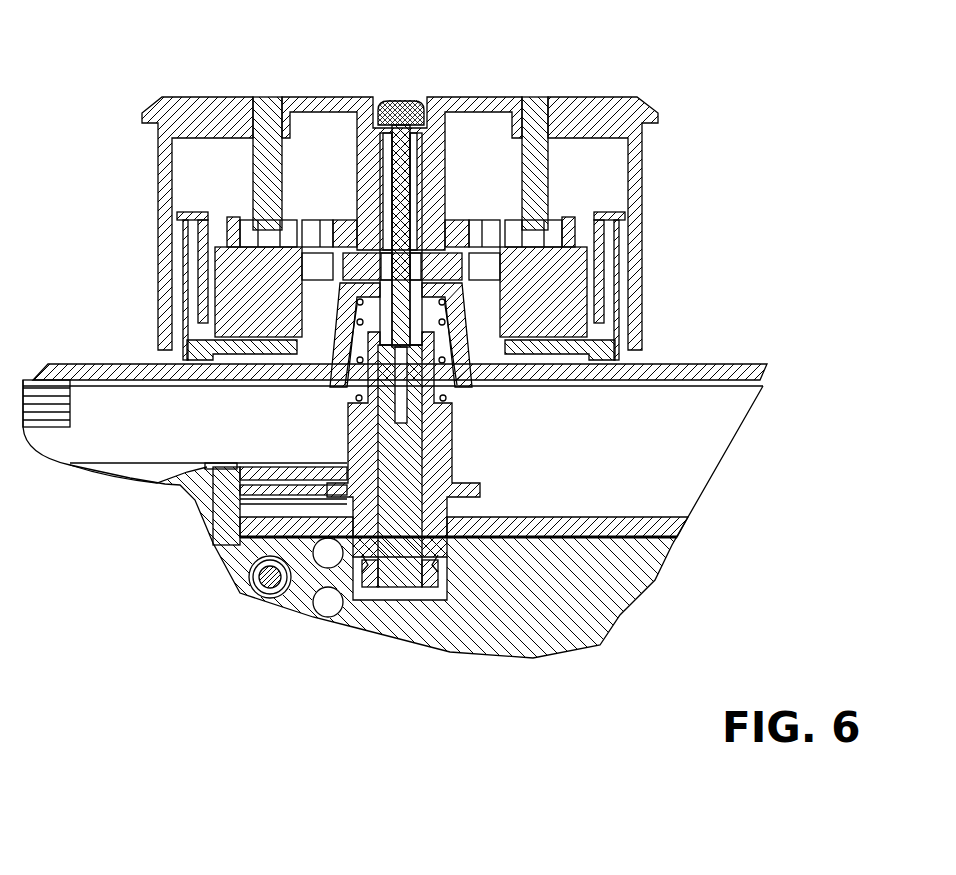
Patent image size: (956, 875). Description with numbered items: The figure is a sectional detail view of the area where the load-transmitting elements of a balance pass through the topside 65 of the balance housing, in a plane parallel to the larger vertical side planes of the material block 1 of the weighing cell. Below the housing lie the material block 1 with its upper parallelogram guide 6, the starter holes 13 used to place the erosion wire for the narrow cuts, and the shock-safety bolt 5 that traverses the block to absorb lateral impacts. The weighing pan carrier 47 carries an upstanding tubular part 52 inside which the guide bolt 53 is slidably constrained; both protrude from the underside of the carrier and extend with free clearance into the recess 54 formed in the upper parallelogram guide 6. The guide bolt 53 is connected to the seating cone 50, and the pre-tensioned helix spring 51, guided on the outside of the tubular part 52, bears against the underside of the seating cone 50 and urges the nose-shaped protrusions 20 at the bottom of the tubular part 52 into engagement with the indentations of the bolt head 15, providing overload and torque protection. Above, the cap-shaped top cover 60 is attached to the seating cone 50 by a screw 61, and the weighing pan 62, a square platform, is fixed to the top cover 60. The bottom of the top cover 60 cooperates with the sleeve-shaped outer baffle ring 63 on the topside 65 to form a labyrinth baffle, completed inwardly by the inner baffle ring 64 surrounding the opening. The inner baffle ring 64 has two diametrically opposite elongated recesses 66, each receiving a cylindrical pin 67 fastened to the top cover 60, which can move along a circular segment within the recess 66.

The material block 1 is at (538, 605).
The shock-safety bolt 5 is at (228, 528).
The upper parallelogram guide 6 is at (640, 525).
The starter holes 13 is at (323, 557).
The bolt head 15 is at (427, 565).
The nose-shaped protrusions 20 is at (325, 598).
The weighing pan carrier 47 is at (267, 467).
The seating cone 50 is at (317, 342).
The helix spring 51 is at (343, 343).
The tubular part 52 is at (442, 452).
The guide bolt 53 is at (405, 472).
The recess 54 is at (372, 590).
The cap-shaped top cover 60 is at (409, 183).
The screw 61 is at (413, 104).
The weighing pan 62 is at (222, 100).
The outer baffle ring 63 is at (183, 308).
The inner baffle ring 64 is at (235, 288).
The topside of the balance housing 65 is at (728, 361).
The elongated recesses 66 is at (265, 238).
The cylindrical pin 67 is at (266, 100).